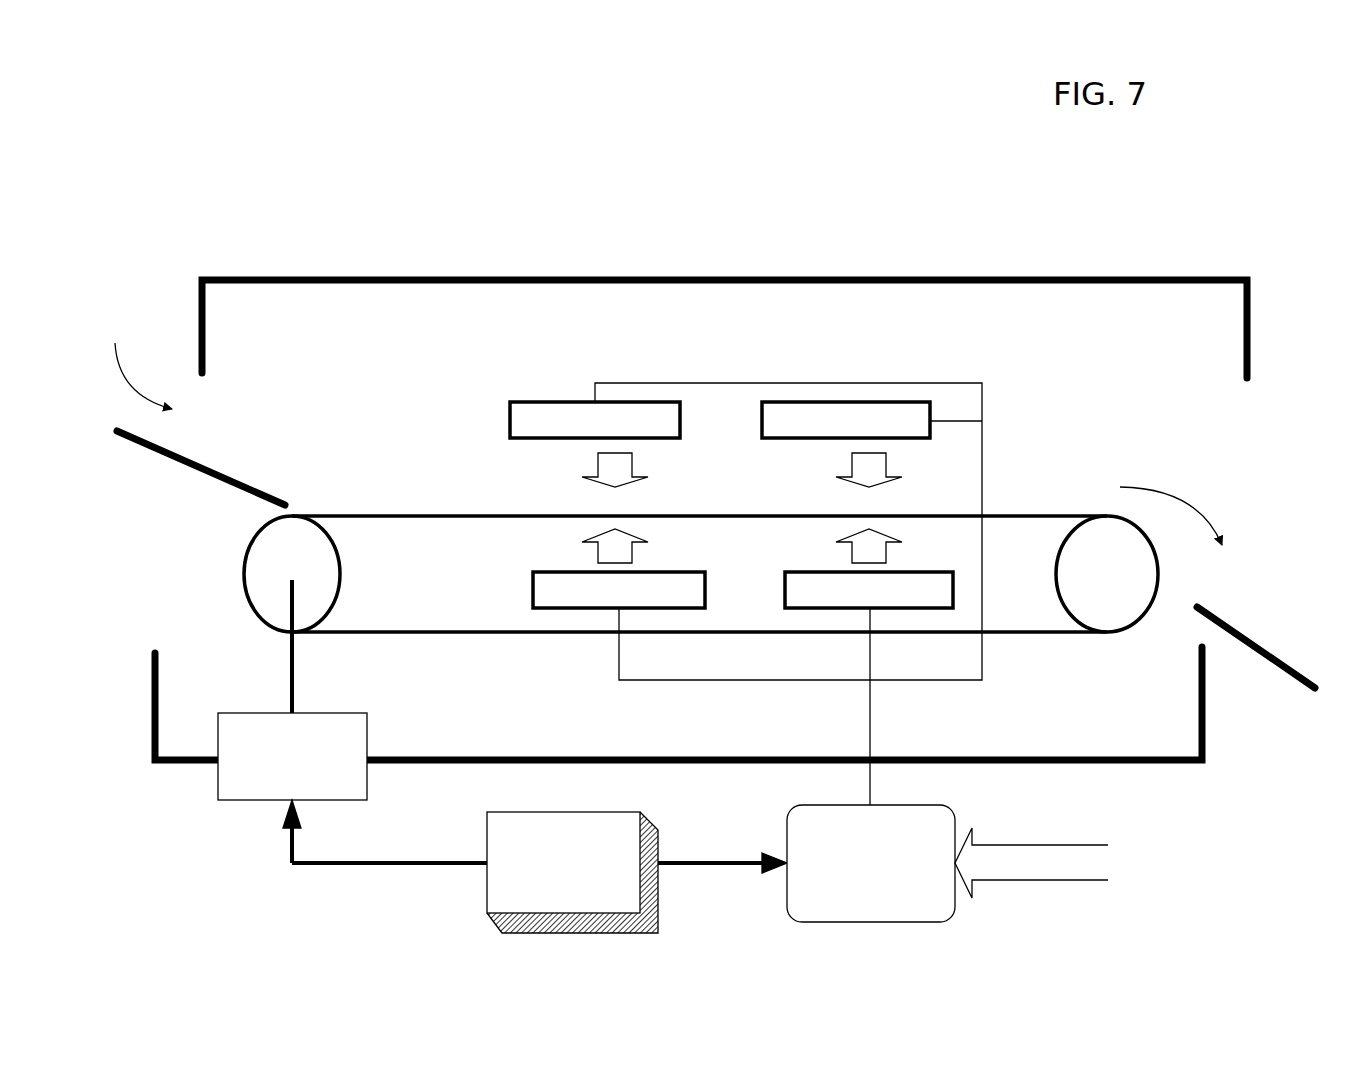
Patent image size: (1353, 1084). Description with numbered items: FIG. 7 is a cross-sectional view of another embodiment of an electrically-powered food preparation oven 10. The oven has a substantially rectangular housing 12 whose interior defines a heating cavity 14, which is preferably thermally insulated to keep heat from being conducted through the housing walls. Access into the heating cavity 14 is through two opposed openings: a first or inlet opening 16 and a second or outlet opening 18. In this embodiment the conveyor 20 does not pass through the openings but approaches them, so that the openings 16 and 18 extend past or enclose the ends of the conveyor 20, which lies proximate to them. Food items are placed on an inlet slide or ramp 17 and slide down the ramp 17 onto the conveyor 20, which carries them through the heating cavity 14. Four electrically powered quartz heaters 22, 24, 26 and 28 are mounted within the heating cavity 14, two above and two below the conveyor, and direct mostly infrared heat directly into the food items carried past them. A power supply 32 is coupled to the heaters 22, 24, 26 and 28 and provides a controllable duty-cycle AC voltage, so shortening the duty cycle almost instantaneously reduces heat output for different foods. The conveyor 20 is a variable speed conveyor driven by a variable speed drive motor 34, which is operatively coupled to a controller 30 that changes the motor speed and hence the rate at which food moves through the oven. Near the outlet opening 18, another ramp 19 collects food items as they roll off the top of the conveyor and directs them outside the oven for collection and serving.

The food preparation oven 10 is at (622, 98).
The housing 12 is at (480, 277).
The heating cavity 14 is at (328, 375).
The inlet opening 16 is at (131, 364).
The inlet ramp 17 is at (195, 475).
The outlet opening 18 is at (1195, 498).
The outlet ramp 19 is at (1213, 612).
The conveyor 20 is at (1018, 503).
The quartz heater 22 is at (578, 444).
The quartz heater 24 is at (832, 444).
The quartz heater 26 is at (602, 568).
The quartz heater 28 is at (855, 568).
The controller 30 is at (535, 866).
The power supply 32 is at (955, 863).
The drive motor 34 is at (273, 710).